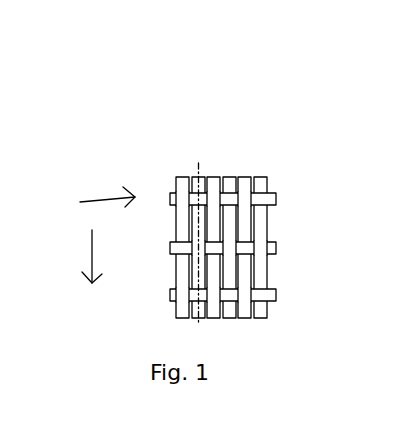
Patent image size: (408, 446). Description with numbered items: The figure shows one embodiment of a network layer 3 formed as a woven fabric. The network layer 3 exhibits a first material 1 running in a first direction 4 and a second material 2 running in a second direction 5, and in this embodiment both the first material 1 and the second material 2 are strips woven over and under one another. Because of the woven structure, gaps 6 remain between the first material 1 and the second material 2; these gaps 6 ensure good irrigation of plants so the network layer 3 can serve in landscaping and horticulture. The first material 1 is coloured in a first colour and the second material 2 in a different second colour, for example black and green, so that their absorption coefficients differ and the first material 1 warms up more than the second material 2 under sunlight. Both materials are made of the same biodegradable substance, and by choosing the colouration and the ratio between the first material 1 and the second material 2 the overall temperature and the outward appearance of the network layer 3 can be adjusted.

The first material 1 is at (272, 194).
The second material 2 is at (261, 182).
The network layer 3 is at (229, 175).
The first direction 4 is at (97, 192).
The second direction 5 is at (90, 251).
The gaps 6 is at (221, 207).